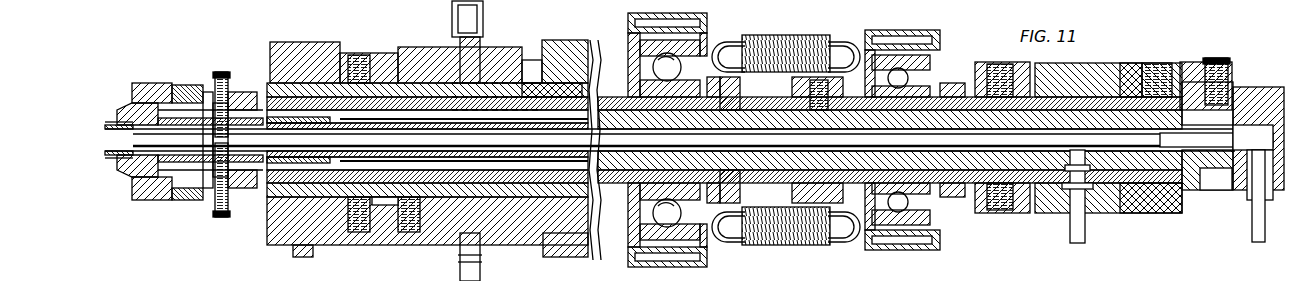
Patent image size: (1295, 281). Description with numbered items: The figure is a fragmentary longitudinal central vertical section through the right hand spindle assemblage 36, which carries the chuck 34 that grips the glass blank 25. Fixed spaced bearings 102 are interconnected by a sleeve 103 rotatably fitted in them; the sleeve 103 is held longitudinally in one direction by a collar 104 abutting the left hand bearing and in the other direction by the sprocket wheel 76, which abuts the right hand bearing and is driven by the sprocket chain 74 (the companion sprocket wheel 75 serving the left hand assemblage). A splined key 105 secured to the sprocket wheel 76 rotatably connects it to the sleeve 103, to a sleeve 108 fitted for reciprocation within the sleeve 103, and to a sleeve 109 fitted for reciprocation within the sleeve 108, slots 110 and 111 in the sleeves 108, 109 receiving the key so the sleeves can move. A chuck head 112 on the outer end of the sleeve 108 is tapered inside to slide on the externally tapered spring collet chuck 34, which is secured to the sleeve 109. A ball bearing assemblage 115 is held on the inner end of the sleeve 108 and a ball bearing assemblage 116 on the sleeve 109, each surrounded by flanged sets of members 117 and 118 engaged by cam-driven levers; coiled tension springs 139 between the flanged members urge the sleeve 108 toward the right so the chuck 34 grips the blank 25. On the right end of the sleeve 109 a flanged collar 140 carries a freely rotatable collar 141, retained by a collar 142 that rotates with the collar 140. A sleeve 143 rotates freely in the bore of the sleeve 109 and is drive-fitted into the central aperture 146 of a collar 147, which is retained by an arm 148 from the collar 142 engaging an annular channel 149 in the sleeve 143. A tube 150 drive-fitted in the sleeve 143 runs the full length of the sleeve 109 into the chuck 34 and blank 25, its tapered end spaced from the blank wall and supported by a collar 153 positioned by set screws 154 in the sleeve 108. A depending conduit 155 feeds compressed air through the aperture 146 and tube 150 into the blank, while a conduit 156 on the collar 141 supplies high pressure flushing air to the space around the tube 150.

The blank 25 is at (112, 125).
The chuck 34 is at (131, 188).
The spindle assemblage 36 is at (246, 90).
The sprocket chain 74 is at (483, 24).
The sprocket wheel 75 is at (196, 273).
The sprocket wheel 76 is at (460, 36).
The bearings 102 is at (286, 50).
The sleeve 103 is at (556, 78).
The collar 104 is at (343, 55).
The splined key 105 is at (500, 87).
The sleeve 108 is at (601, 100).
The sleeve 109 is at (599, 125).
The slot 110 is at (390, 103).
The slot 111 is at (406, 118).
The chuck head 112 is at (160, 201).
The ball bearing assemblage 115 is at (712, 32).
The ball bearing assemblage 116 is at (942, 70).
The flanged set of members 117 is at (690, 16).
The flanged set of members 118 is at (896, 30).
The coiled tension springs 139 is at (808, 35).
The flanged collar 140 is at (987, 58).
The collar 141 is at (1100, 63).
The collar 142 is at (1205, 60).
The sleeve 143 is at (1222, 160).
The central aperture 146 is at (1232, 152).
The collar 147 is at (1255, 87).
The arm 148 is at (1228, 62).
The annular channel 149 is at (1190, 170).
The tube 150 is at (176, 140).
The collar 153 is at (200, 196).
The set screws 154 is at (221, 72).
The conduit 155 is at (1262, 242).
The conduit 156 is at (1088, 233).